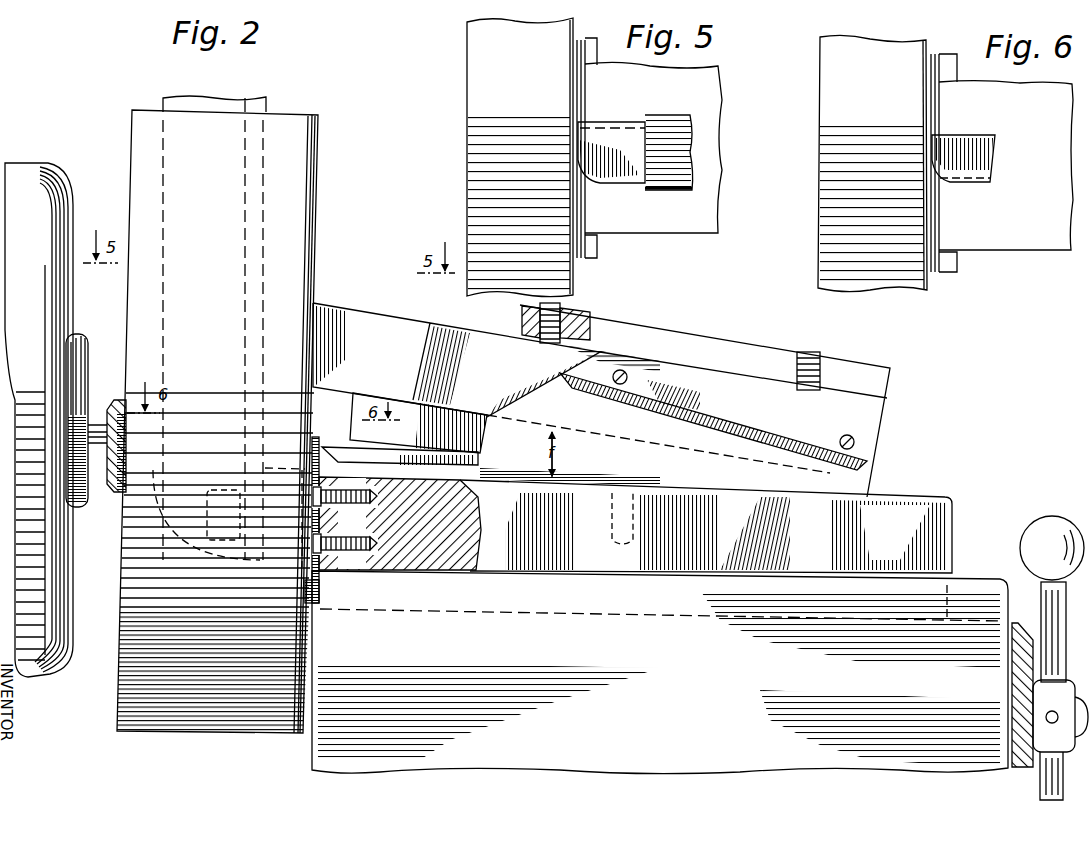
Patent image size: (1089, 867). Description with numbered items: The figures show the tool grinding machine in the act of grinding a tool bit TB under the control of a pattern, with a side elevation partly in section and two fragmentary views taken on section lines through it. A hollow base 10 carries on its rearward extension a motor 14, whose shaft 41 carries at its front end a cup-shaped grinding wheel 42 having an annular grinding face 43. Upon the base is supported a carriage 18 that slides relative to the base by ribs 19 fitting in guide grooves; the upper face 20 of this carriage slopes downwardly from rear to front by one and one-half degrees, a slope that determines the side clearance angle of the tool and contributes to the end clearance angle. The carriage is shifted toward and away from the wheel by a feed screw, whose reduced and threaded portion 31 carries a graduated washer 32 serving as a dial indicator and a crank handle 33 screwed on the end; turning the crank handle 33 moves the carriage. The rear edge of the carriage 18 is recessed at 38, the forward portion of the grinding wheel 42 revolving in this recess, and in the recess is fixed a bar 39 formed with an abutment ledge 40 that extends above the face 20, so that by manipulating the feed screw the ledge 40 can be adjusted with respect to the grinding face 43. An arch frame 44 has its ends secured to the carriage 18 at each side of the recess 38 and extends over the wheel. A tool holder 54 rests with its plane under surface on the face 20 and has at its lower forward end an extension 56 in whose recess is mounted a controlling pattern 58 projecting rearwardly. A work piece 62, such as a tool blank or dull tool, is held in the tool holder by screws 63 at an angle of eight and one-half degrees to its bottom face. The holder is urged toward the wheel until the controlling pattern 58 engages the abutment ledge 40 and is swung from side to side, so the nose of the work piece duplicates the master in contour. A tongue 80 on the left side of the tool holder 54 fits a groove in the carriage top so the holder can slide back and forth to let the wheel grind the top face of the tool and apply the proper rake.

In FIG. 2, the base 10 is at (660, 672).
In FIG. 2, the motor 14 is at (49, 672).
In FIG. 2, the carriage 18 is at (706, 526).
In FIG. 5, the carriage 18 is at (687, 80).
In FIG. 2, the ribs 19 is at (317, 605).
In FIG. 2, the upper face of the carriage 20 is at (897, 496).
In FIG. 5, the upper face of the carriage 20 is at (714, 96).
In FIG. 6, the upper face of the carriage 20 is at (1063, 88).
In FIG. 2, the reduced and threaded portion of the feed screw 31 is at (1078, 698).
In FIG. 2, the graduated washer 32 is at (1033, 607).
In FIG. 2, the crank handle 33 is at (1062, 608).
In FIG. 2, the recess 38 is at (372, 560).
In FIG. 2, the bar 39 is at (322, 560).
In FIG. 2, the abutment ledge 40 is at (318, 438).
In FIG. 5, the abutment ledge 40 is at (580, 250).
In FIG. 6, the abutment ledge 40 is at (940, 270).
In FIG. 2, the shaft 41 is at (97, 447).
In FIG. 2, the grinding wheel 42 is at (302, 163).
In FIG. 5, the grinding wheel 42 is at (477, 75).
In FIG. 6, the grinding wheel 42 is at (827, 163).
In FIG. 2, the annular grinding face 43 is at (317, 200).
In FIG. 2, the arch frame 44 is at (175, 107).
In FIG. 2, the tool holder 54 is at (873, 422).
In FIG. 2, the extension 56 is at (452, 428).
In FIG. 2, the controlling pattern 58 is at (403, 450).
In FIG. 6, the controlling pattern 58 is at (975, 173).
In FIG. 2, the work piece 62 is at (480, 342).
In FIG. 5, the work piece 62 is at (630, 167).
In FIG. 2, the screws 63 is at (560, 312).
In FIG. 2, the tongue 80 is at (713, 421).
In FIG. 2, the tool bit TB is at (397, 330).
In FIG. 5, the tool bit TB is at (620, 140).